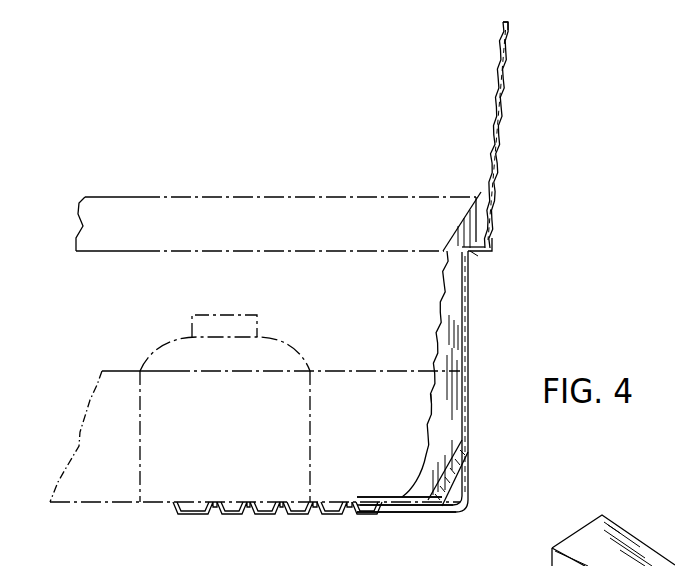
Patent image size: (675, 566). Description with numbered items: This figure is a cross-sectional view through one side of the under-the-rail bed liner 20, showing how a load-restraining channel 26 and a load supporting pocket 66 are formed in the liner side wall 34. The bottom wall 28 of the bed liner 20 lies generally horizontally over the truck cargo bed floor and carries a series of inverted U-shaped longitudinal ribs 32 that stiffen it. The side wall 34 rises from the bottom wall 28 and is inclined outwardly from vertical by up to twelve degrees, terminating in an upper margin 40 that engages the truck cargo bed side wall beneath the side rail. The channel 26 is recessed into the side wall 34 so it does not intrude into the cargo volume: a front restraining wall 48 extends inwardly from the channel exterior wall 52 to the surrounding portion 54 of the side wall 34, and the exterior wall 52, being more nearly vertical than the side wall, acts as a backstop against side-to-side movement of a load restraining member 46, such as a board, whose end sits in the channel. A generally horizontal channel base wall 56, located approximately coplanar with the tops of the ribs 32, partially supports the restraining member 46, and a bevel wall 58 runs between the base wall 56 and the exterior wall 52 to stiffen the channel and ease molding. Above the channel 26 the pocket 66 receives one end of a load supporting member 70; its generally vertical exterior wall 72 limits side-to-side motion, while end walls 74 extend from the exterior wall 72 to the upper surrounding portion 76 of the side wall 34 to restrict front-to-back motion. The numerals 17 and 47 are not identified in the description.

The corner of adjacent figure component 17 is at (672, 562).
The bed liner 20 is at (452, 83).
The channel 26 is at (436, 309).
The bottom wall 28 is at (340, 500).
The longitudinal ribs 32 is at (318, 512).
The side wall 34 is at (501, 88).
The upper margin 40 is at (509, 22).
The load restraining member 46 is at (117, 371).
The component 47 is at (275, 337).
The front restraining wall 48 is at (438, 331).
The channel exterior wall 52 is at (470, 332).
The surrounding portion of the side wall 54 is at (431, 399).
The channel base wall 56 is at (418, 512).
The bevel wall 58 is at (452, 482).
The load supporting pocket 66 is at (481, 255).
The load supporting member 70 is at (137, 197).
The pocket exterior wall 72 is at (493, 226).
The end wall 74 is at (468, 214).
The upper surrounding portion 76 is at (488, 192).